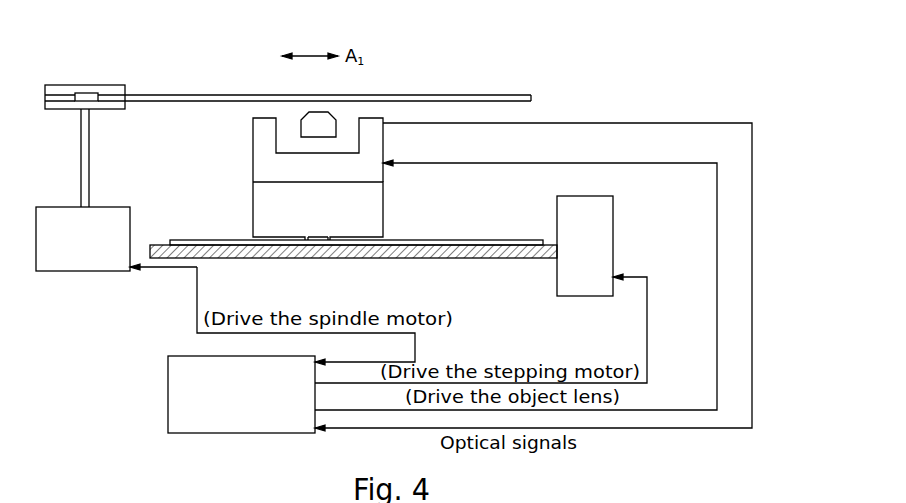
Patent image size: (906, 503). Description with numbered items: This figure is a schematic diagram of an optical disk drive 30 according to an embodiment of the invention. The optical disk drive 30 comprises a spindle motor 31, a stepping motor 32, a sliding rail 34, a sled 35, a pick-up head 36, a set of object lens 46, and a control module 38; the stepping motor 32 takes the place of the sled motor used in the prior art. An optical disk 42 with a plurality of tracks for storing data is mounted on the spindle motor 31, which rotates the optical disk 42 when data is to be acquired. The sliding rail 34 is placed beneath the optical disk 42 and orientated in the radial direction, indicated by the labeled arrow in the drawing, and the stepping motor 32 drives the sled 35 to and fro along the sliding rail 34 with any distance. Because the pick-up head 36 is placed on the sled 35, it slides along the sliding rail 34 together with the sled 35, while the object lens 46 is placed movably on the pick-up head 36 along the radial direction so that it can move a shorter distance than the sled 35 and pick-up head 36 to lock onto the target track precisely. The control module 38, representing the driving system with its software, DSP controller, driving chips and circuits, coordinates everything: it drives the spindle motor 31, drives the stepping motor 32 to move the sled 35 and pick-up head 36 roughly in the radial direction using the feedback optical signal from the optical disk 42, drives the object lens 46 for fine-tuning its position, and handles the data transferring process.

The optical disk drive 30 is at (705, 66).
The spindle motor 31 is at (82, 272).
The stepping motor 32 is at (613, 259).
The sliding rail 34 is at (433, 243).
The sled 35 is at (383, 208).
The pick-up head 36 is at (383, 138).
The control module 38 is at (168, 388).
The optical disk 42 is at (531, 98).
The object lens 46 is at (326, 122).